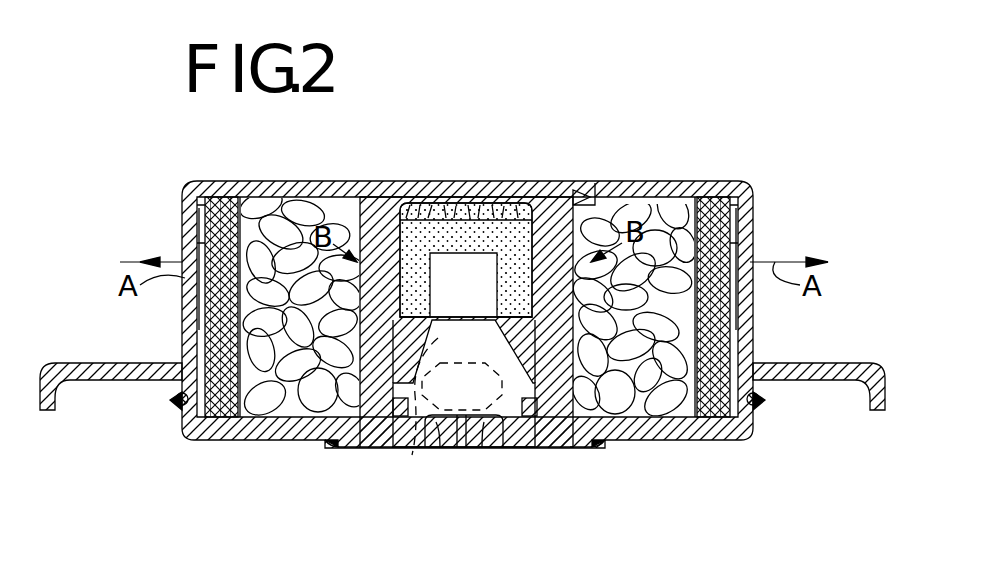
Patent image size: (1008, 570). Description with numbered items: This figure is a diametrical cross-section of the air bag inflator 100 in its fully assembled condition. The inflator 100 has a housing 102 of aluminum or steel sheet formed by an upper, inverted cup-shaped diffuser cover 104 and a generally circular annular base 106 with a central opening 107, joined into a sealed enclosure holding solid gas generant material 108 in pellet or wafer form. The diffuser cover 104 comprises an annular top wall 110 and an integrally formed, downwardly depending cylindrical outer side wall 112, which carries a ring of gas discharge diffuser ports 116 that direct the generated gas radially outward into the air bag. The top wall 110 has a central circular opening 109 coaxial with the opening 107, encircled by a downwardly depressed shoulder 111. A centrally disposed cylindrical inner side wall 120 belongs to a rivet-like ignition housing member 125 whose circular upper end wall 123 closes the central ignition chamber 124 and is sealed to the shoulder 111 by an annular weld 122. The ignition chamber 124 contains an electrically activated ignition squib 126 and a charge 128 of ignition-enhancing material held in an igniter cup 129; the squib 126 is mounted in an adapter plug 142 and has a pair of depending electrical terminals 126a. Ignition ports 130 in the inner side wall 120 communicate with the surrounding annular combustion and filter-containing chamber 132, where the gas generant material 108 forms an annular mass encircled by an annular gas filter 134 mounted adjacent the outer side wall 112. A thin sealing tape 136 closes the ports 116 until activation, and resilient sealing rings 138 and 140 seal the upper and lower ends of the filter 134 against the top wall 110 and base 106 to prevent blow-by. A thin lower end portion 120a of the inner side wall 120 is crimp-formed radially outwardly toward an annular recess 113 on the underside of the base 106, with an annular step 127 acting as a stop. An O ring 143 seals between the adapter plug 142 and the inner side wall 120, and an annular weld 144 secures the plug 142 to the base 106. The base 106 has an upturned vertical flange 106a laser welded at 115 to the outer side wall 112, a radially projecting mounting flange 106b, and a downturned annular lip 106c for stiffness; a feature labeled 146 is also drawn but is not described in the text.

The air bag inflator 100 is at (490, 557).
The housing 102 is at (136, 262).
The diffuser cover 104 is at (748, 188).
The annular base 106 is at (152, 456).
The upturned vertical flange 106a is at (172, 404).
The mounting flange 106b is at (118, 363).
The downturned annular lip 106c is at (46, 400).
The central opening 107 is at (362, 448).
The gas generant material 108 is at (266, 282).
The circular opening 109 is at (600, 190).
The annular top wall 110 is at (262, 188).
The downwardly depressed shoulder 111 is at (353, 195).
The cylindrical outer side wall 112 is at (188, 338).
The annular recess 113 is at (330, 447).
The laser weld 115 is at (174, 399).
The gas discharge diffuser ports 116 is at (190, 243).
The cylindrical inner side wall 120 is at (392, 238).
The lower end portion 120a is at (342, 450).
The annular weld 122 is at (333, 191).
The circular upper end wall 123 is at (490, 200).
The central ignition chamber 124 is at (472, 250).
The rivet-like ignition housing member 125 is at (446, 180).
The ignition squib 126 is at (410, 458).
The electrical terminals 126a is at (522, 448).
The annular step 127 is at (562, 448).
The ignition-enhancing material 128 is at (447, 236).
The igniter cup 129 is at (415, 197).
The ignition ports 130 is at (368, 235).
The combustion and filter-containing chamber 132 is at (250, 192).
The annular gas filter 134 is at (190, 440).
The sealing tape 136 is at (196, 270).
The sealing ring 138 is at (200, 192).
The sealing ring 140 is at (214, 442).
The adapter plug 142 is at (442, 450).
The O ring 143 is at (430, 346).
The annular weld 144 is at (378, 450).
The weld joint 146 is at (300, 442).